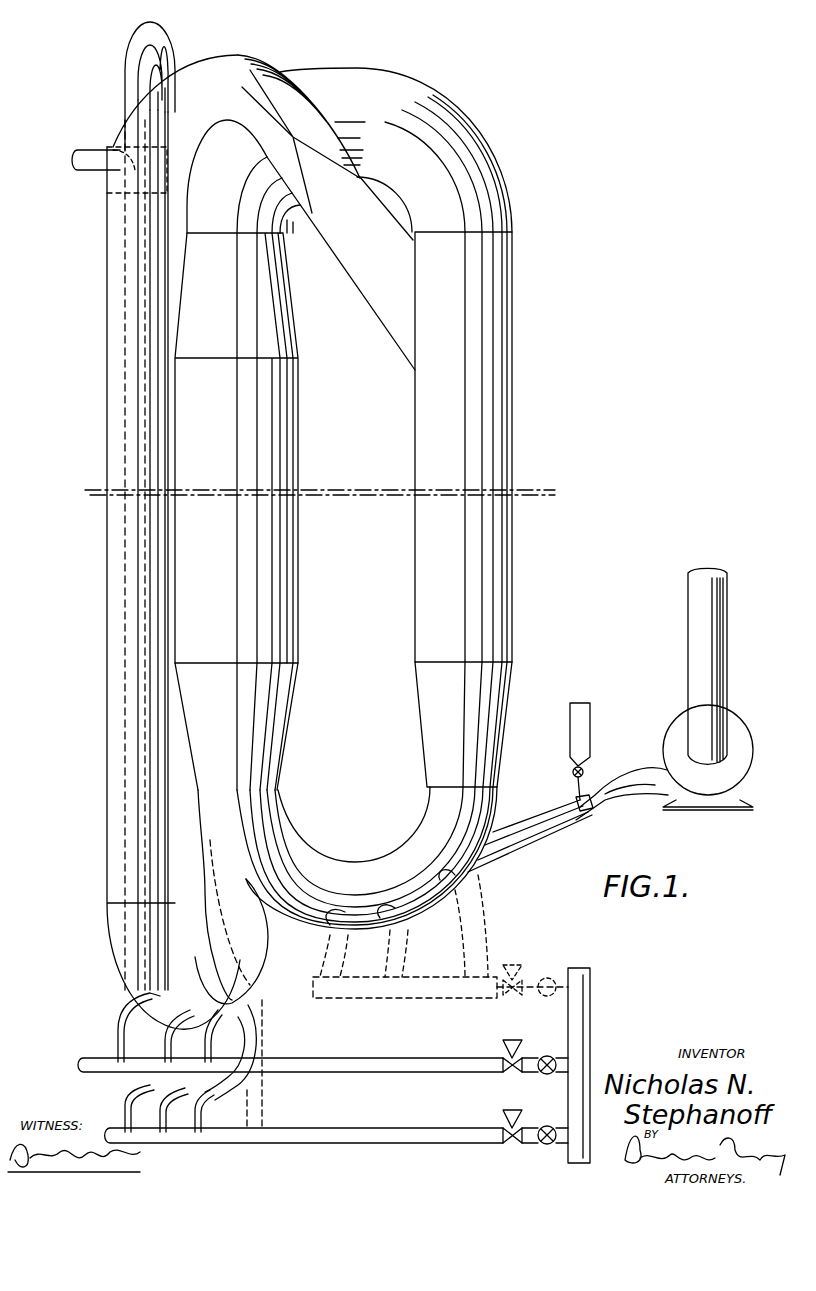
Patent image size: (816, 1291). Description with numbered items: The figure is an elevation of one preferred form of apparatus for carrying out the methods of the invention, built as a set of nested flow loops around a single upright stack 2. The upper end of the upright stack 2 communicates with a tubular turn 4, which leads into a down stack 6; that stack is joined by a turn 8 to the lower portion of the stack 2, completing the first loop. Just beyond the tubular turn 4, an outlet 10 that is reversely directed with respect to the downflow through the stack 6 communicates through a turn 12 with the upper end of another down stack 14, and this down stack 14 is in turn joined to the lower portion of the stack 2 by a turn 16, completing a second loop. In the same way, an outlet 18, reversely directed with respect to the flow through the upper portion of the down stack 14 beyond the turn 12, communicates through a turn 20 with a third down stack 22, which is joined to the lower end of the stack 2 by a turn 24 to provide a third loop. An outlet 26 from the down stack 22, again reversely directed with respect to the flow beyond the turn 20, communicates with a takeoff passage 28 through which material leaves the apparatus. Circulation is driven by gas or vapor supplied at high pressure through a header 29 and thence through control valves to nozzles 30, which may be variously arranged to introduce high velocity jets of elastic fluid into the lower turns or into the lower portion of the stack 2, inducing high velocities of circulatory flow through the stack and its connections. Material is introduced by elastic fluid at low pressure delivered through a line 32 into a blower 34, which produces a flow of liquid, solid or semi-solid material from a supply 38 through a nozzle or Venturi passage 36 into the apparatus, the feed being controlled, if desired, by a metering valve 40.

The upright stack 2 is at (283, 567).
The tubular turn 4 is at (341, 77).
The stack 6 is at (503, 397).
The turn 8 is at (333, 863).
The outlet 10 is at (383, 306).
The turn 12 is at (250, 63).
The down stack 14 is at (107, 440).
The turn 16 is at (212, 917).
The outlet 18 is at (173, 187).
The turn 20 is at (163, 48).
The down stack 22 is at (120, 373).
The turn 24 is at (242, 1032).
The outlet 26 is at (122, 302).
The takeoff passage 28 is at (104, 172).
The header 29 is at (585, 1027).
The nozzles 30 is at (128, 998).
The line 32 is at (721, 643).
The blower 34 is at (740, 727).
The nozzle or Venturi passage 36 is at (533, 838).
The supply 38 is at (585, 721).
The metering valve 40 is at (583, 773).